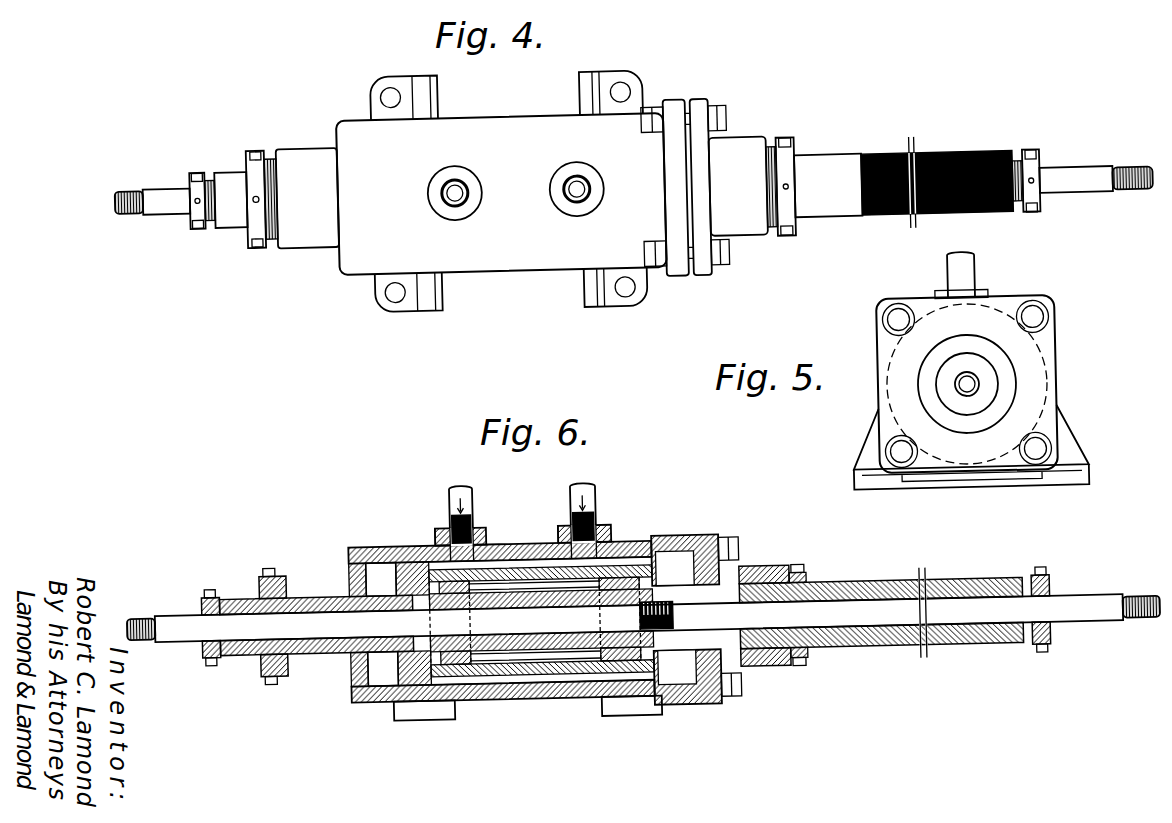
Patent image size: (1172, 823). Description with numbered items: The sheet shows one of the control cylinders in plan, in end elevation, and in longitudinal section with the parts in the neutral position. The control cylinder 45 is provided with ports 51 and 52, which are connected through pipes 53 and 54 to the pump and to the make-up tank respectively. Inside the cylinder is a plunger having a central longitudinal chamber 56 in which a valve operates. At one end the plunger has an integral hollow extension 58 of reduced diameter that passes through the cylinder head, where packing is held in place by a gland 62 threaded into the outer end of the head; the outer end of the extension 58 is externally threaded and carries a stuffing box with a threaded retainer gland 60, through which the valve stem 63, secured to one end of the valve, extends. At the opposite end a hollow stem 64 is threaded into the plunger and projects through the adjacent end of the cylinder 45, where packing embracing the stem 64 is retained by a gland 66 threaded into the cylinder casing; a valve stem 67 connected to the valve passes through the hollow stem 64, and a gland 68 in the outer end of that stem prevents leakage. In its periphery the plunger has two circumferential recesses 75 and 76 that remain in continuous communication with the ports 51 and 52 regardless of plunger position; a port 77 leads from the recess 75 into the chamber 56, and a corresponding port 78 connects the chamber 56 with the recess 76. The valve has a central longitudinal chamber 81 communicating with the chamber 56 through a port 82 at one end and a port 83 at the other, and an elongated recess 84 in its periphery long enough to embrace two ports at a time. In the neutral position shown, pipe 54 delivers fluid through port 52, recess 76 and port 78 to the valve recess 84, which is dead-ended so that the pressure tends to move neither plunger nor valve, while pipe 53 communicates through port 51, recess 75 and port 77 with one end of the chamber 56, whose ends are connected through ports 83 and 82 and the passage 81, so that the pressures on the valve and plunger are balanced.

In FIG. 4, the control cylinder 45 is at (480, 272).
In FIG. 5, the control cylinder 45 is at (1043, 368).
In FIG. 6, the control cylinder 45 is at (490, 695).
In FIG. 4, the port 51 is at (457, 186).
In FIG. 6, the port 51 is at (437, 538).
In FIG. 4, the port 52 is at (580, 188).
In FIG. 6, the port 52 is at (571, 528).
In FIG. 4, the pipe 53 is at (466, 201).
In FIG. 6, the pipe 53 is at (478, 490).
In FIG. 4, the pipe 54 is at (590, 191).
In FIG. 5, the pipe 54 is at (978, 271).
In FIG. 6, the pipe 54 is at (600, 492).
In FIG. 6, the central longitudinal chamber 56 is at (733, 590).
In FIG. 4, the plunger extension 58 is at (831, 164).
In FIG. 6, the plunger extension 58 is at (845, 595).
In FIG. 4, the threaded retainer gland 60 is at (1031, 226).
In FIG. 5, the threaded retainer gland 60 is at (935, 393).
In FIG. 6, the threaded retainer gland 60 is at (1040, 595).
In FIG. 4, the gland 62 is at (790, 146).
In FIG. 6, the gland 62 is at (804, 584).
In FIG. 4, the stem 63 is at (1058, 182).
In FIG. 5, the stem 63 is at (980, 384).
In FIG. 6, the stem 63 is at (1090, 600).
In FIG. 4, the hollow stem 64 is at (218, 166).
In FIG. 6, the hollow stem 64 is at (233, 591).
In FIG. 4, the gland 66 is at (258, 243).
In FIG. 6, the gland 66 is at (272, 669).
In FIG. 4, the valve stem 67 is at (165, 181).
In FIG. 6, the valve stem 67 is at (165, 606).
In FIG. 4, the gland 68 is at (196, 221).
In FIG. 6, the gland 68 is at (207, 649).
In FIG. 6, the circumferential recess 75 is at (495, 546).
In FIG. 6, the circumferential recess 76 is at (618, 548).
In FIG. 6, the port 77 is at (388, 543).
In FIG. 6, the port 78 is at (553, 580).
In FIG. 6, the central longitudinal chamber 81 is at (639, 618).
In FIG. 6, the port 82 is at (598, 640).
In FIG. 6, the port 83 is at (478, 615).
In FIG. 6, the elongated recess 84 is at (612, 596).